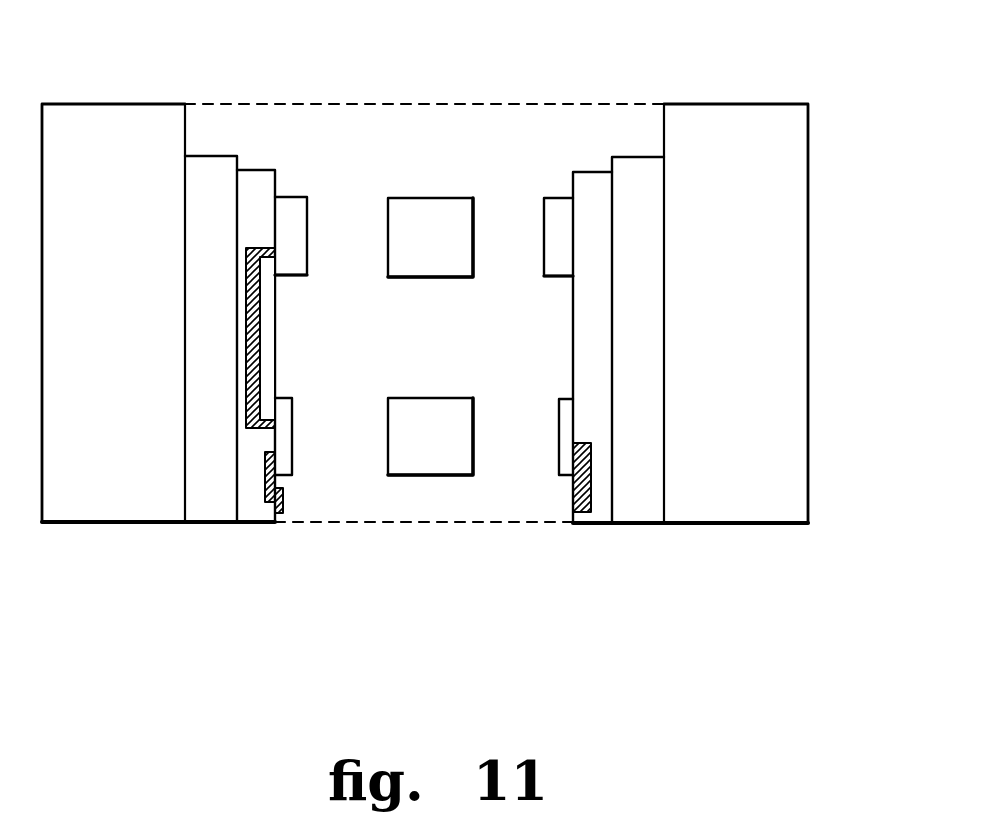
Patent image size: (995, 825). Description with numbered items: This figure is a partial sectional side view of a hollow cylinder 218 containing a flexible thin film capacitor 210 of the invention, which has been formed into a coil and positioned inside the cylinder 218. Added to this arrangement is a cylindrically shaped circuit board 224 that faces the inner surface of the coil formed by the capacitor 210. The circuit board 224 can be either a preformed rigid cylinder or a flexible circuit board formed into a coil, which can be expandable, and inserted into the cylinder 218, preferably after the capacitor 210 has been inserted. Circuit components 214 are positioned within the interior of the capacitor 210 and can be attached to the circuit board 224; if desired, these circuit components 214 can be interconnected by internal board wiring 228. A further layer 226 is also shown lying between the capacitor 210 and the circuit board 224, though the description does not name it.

The flexible thin film capacitor 210 is at (205, 163).
The circuit components 214 is at (560, 218).
The hollow cylinder 218 is at (142, 495).
The cylindrically shaped circuit board 224 is at (592, 300).
The dielectric spacer 226 is at (533, 365).
The internal board wiring 228 is at (285, 497).